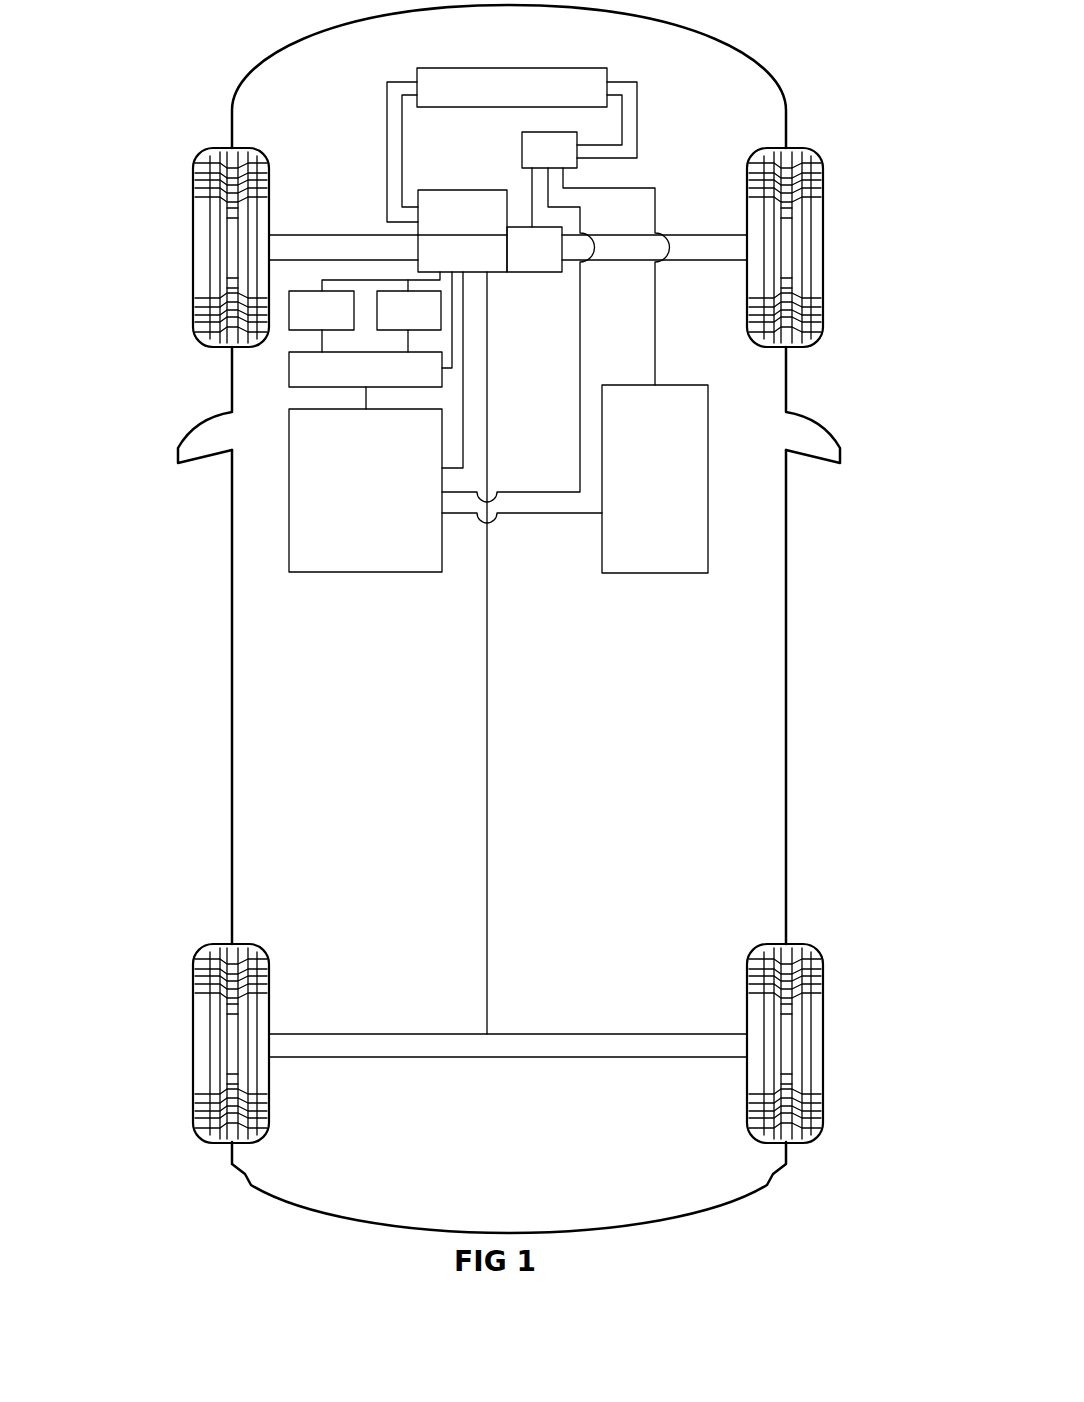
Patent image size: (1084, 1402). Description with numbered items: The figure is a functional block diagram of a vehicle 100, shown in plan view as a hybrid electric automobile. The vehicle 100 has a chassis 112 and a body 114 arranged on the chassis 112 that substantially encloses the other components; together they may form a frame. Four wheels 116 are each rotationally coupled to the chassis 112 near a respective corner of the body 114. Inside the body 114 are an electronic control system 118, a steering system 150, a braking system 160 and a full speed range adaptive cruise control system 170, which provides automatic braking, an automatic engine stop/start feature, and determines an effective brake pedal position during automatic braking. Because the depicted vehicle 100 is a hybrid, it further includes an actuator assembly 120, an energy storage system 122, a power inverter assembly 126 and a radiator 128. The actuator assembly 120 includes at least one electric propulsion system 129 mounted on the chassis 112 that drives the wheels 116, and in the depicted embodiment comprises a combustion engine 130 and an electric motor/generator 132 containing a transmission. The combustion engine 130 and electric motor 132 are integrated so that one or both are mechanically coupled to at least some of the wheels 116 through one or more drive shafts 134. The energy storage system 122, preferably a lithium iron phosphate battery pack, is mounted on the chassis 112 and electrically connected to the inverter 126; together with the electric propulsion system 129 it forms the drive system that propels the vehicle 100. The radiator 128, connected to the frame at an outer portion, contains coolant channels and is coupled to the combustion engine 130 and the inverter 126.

The vehicle 100 is at (186, 25).
The chassis 112 is at (474, 717).
The body 114 is at (230, 663).
The wheels 116 is at (192, 248).
The electronic control system 118 is at (385, 503).
The actuator assembly 120 is at (487, 246).
The energy storage system 122 is at (674, 491).
The power inverter assembly 126 is at (566, 165).
The radiator 128 is at (465, 68).
The electric propulsion system 129 is at (525, 227).
The combustion engine 130 is at (481, 226).
The electric motor/generator 132 is at (552, 262).
The drive shafts 134 is at (345, 235).
The steering system 150 is at (341, 324).
The braking system 160 is at (428, 324).
The full speed range adaptive cruise control system 170 is at (385, 384).